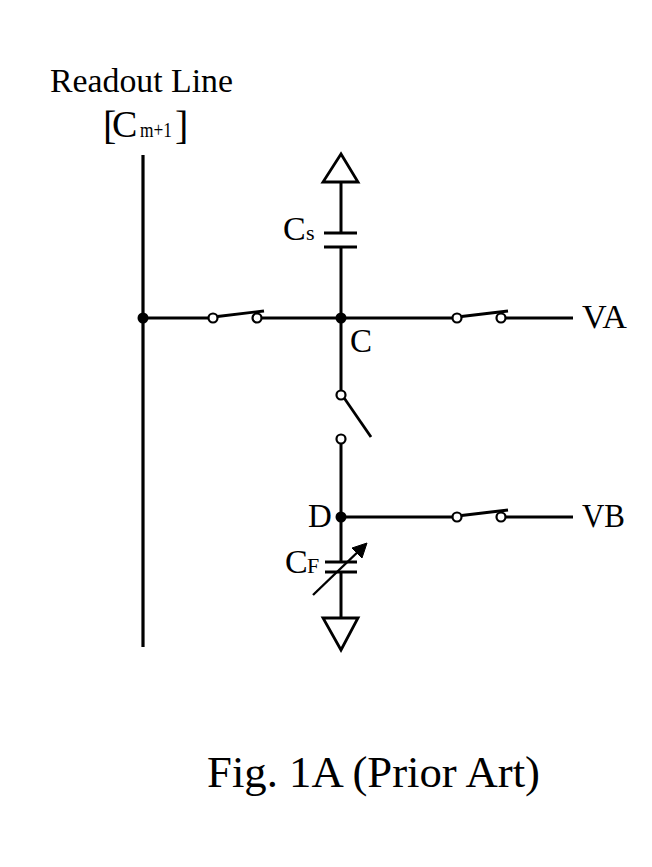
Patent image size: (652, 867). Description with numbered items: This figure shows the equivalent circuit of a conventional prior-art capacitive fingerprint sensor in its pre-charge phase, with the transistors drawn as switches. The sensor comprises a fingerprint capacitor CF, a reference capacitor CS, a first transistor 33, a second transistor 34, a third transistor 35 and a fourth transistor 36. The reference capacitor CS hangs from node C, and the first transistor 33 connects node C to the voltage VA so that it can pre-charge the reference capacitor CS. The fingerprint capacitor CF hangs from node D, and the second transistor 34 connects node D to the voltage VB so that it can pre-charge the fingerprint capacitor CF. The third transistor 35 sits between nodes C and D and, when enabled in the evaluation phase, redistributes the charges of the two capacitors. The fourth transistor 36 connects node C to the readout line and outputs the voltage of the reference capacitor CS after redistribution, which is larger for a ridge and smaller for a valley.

The first transistor 33 is at (478, 305).
The second transistor 34 is at (478, 523).
The third transistor 35 is at (369, 413).
The fourth transistor 36 is at (232, 305).